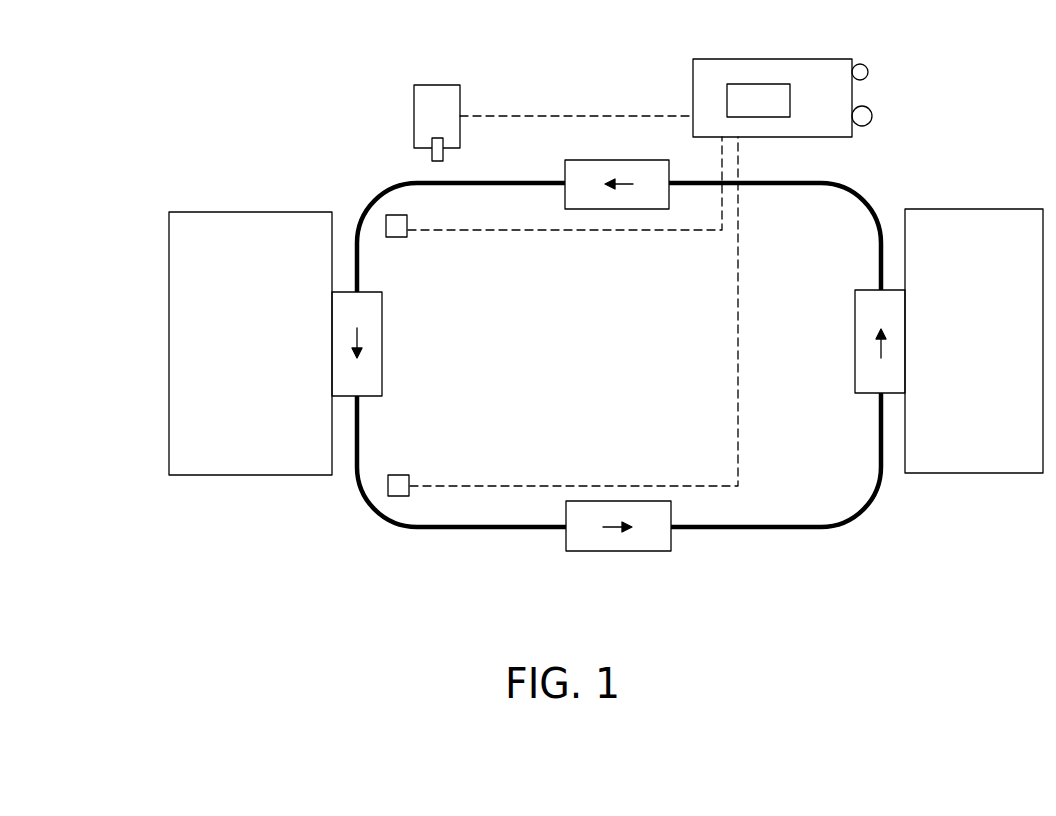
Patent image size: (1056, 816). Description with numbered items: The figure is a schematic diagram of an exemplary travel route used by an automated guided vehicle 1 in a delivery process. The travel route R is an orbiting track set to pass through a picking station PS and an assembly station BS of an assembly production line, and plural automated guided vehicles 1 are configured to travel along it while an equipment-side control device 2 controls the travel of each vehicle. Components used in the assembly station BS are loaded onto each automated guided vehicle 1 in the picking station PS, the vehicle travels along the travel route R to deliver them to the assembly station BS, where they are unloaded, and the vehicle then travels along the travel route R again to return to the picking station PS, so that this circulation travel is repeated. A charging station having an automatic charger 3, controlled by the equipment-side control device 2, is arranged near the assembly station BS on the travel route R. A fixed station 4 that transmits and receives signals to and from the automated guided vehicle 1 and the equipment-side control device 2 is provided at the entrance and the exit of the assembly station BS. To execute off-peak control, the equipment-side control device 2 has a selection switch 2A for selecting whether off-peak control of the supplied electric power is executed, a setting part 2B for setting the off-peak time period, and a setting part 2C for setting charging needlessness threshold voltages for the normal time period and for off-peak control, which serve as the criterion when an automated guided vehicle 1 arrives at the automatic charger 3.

The automated guided vehicle 1 is at (591, 178).
The equipment-side control device 2 is at (802, 70).
The selection switch 2A is at (866, 72).
The setting part 2B is at (870, 116).
The setting part 2C is at (752, 95).
The automatic charger 3 is at (438, 105).
The fixed station 4 is at (396, 228).
The travel route R is at (761, 524).
The assembly station BS is at (279, 204).
The picking station PS is at (958, 202).